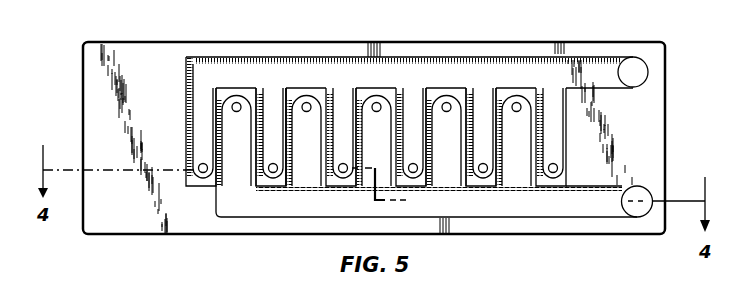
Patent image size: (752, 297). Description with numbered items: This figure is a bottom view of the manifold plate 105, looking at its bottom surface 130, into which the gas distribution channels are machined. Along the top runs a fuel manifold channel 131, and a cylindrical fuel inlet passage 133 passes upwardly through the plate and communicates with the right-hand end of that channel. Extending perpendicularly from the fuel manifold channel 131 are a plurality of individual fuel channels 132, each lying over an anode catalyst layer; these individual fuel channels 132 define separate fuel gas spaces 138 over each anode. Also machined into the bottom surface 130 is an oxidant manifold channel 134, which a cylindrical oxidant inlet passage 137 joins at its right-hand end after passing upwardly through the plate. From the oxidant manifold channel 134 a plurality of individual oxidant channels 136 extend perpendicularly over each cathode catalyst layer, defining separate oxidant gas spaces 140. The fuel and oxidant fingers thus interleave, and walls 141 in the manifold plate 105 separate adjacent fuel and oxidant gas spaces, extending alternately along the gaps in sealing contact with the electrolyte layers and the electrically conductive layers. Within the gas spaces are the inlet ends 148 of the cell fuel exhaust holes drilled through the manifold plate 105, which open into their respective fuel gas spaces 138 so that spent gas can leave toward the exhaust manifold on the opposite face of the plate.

The manifold plate 105 is at (667, 123).
The bottom surface 130 is at (153, 78).
The fuel manifold channel 131 is at (590, 66).
The individual fuel channels 132 is at (257, 116).
The fuel inlet passage 133 is at (650, 70).
The oxidant manifold channel 134 is at (600, 210).
The individual oxidant channels 136 is at (458, 144).
The oxidant inlet passage 137 is at (637, 218).
The fuel gas spaces 138 is at (412, 107).
The oxidant gas spaces 140 is at (368, 185).
The walls 141 is at (287, 112).
The inlet ends 148 is at (200, 173).